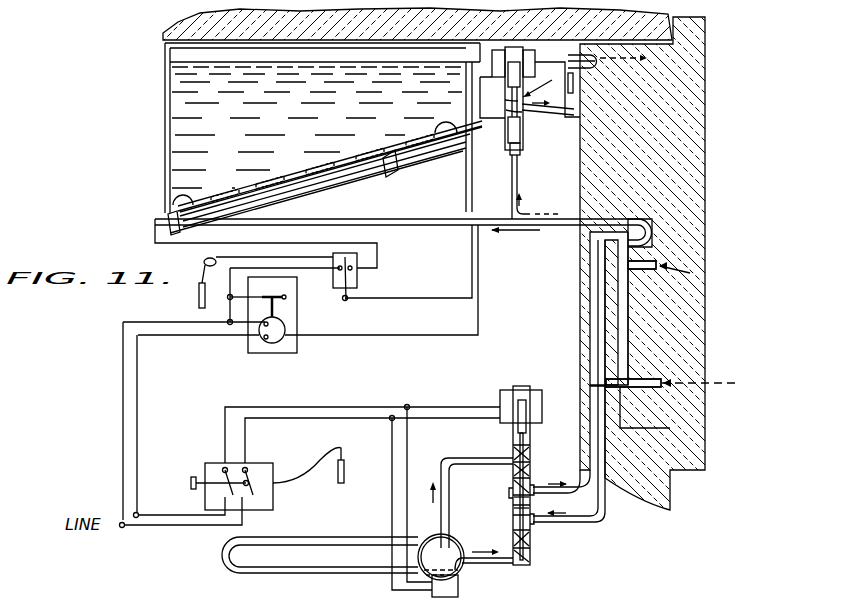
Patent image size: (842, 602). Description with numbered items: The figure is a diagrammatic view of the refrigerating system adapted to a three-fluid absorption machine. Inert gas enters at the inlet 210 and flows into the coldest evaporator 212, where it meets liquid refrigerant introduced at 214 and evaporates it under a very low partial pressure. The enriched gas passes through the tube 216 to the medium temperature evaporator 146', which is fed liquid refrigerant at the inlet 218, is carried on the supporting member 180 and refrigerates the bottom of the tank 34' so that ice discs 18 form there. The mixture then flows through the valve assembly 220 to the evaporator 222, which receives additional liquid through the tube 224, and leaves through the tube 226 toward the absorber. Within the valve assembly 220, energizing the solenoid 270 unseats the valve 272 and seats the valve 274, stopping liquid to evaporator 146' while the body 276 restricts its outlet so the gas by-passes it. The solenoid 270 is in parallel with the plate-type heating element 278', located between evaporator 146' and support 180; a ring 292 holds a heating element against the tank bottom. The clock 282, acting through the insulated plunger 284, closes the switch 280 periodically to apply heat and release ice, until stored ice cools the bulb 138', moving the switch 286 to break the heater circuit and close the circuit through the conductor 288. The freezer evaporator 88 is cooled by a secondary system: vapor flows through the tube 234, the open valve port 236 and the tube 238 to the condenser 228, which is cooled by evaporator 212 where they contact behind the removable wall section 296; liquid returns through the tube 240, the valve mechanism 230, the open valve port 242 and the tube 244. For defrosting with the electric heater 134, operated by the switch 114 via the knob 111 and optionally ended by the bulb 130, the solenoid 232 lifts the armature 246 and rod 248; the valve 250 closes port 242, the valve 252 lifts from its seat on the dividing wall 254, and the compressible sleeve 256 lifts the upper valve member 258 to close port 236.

The tank 34' is at (322, 128).
The ice discs 18 is at (183, 197).
The evaporator 146' is at (331, 169).
The plate-type heating element 278' is at (330, 171).
The ring 292 is at (388, 170).
The supporting member 180 is at (315, 191).
The tube 216 is at (440, 227).
The solenoid 270 is at (537, 55).
The inlet 218 is at (548, 89).
The valve assembly 220 is at (507, 100).
The valve 274 is at (508, 112).
The body 276 is at (521, 133).
The valve 272 is at (521, 153).
The tube 226 is at (607, 52).
The tube 224 is at (597, 64).
The evaporator 222 is at (574, 93).
The removable wall section 296 is at (642, 263).
The inlet 214 is at (657, 266).
The evaporator 212 is at (632, 300).
The inert gas inlet 210 is at (655, 383).
The condenser 228 is at (598, 297).
The tube 238 is at (604, 330).
The switch 280 is at (272, 315).
The conductor 288 is at (306, 270).
The switch 286 is at (358, 284).
The insulated plunger 284 is at (285, 300).
The clock 282 is at (286, 329).
The bulb 138' is at (178, 283).
The switch 114 is at (212, 463).
The knob 111 is at (190, 484).
The bulb 130 is at (346, 471).
The tube 234 is at (441, 468).
The solenoid 232 is at (524, 478).
The armature 246 is at (530, 425).
The rod 248 is at (517, 442).
The valve port 236 is at (530, 460).
The upper valve member 258 is at (518, 477).
The compressible sleeve 256 is at (531, 478).
The valve mechanism 230 is at (507, 496).
The valve 252 is at (519, 498).
The dividing wall 254 is at (519, 512).
The valve port 242 is at (532, 532).
The valve 250 is at (531, 553).
The tube 244 is at (486, 563).
The tube 240 is at (596, 526).
The electric heater 134 is at (448, 594).
The freezer evaporator 88 is at (320, 555).